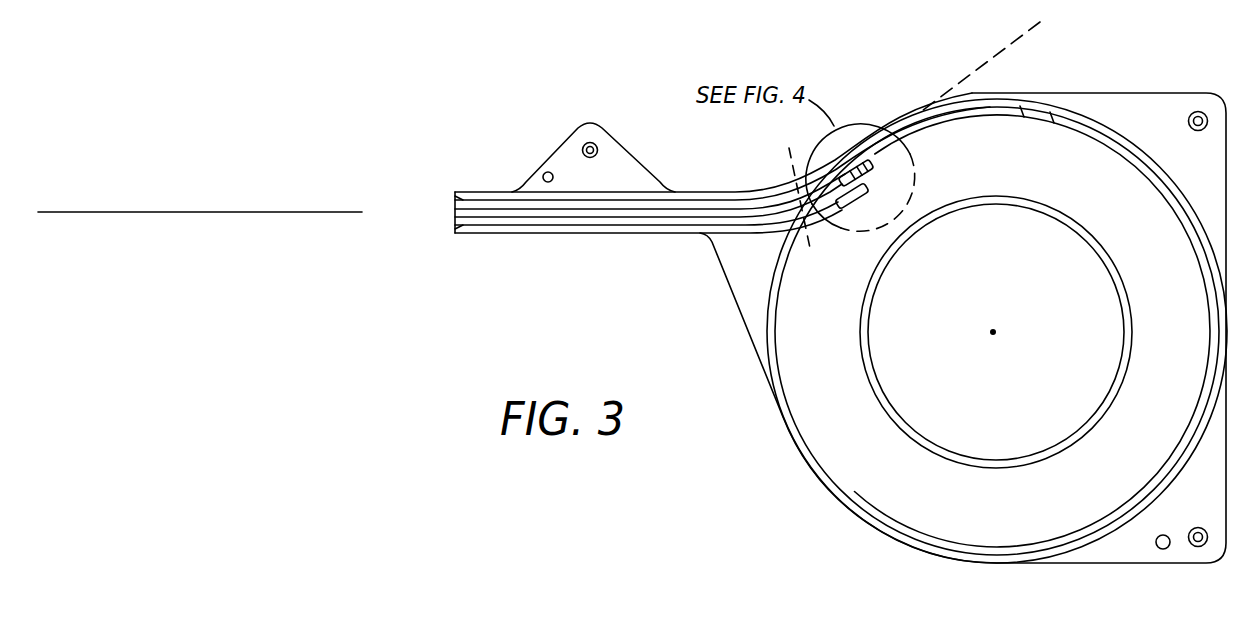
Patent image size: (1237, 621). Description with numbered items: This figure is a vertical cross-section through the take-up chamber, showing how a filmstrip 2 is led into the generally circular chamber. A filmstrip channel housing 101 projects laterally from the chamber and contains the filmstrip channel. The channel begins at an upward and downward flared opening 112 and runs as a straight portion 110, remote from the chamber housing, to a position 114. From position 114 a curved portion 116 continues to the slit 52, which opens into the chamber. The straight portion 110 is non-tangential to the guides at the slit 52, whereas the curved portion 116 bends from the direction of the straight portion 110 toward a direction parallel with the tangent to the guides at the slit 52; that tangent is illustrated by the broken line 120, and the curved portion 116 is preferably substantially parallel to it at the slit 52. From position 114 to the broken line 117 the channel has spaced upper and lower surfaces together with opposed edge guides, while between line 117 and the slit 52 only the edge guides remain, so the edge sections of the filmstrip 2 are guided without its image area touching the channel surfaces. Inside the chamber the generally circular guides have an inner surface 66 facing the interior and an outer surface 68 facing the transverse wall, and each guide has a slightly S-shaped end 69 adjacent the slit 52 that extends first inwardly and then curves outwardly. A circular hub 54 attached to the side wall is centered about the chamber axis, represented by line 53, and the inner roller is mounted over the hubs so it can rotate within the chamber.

The filmstrip 2 is at (82, 212).
The slit 52 is at (873, 179).
The line representing the chamber axis 53 is at (993, 332).
The circular hub 54 is at (1027, 203).
The inner surface 66 is at (990, 118).
The outer surface 68 is at (1060, 118).
The S-shaped end 69 is at (868, 150).
The filmstrip channel housing 101 is at (683, 212).
The straight portion 110 is at (530, 212).
The flared opening 112 is at (455, 210).
The position 114 is at (732, 216).
The curved portion 116 is at (782, 222).
The broken line position 117 is at (818, 213).
The tangent line 120 is at (1004, 58).